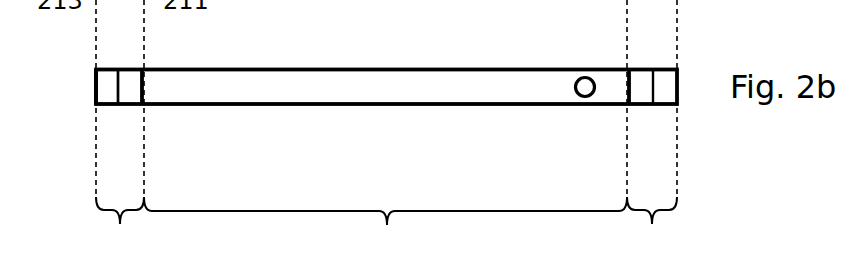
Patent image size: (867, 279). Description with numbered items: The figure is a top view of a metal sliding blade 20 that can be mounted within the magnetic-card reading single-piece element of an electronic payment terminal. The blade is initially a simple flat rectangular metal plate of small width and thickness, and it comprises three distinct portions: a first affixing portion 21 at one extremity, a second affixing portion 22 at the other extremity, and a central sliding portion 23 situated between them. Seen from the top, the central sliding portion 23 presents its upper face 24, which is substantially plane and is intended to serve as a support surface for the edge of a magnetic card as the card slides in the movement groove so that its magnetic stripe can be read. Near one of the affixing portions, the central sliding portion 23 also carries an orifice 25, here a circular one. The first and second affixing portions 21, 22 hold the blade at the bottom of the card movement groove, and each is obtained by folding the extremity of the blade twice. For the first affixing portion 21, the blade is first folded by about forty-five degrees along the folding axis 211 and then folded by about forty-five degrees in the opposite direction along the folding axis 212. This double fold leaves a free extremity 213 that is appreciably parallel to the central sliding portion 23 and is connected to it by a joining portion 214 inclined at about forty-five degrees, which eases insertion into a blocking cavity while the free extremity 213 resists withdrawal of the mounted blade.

The metal sliding blade 20 is at (432, 55).
The first affixing portion 21 is at (120, 130).
The second affixing portion 22 is at (652, 130).
The central sliding portion 23 is at (385, 228).
The upper face 24 is at (348, 97).
The orifice 25 is at (583, 70).
The folding axis 211 is at (146, 80).
The folding axis 212 is at (97, 95).
The free extremity 213 is at (108, 88).
The joining portion 214 is at (138, 103).